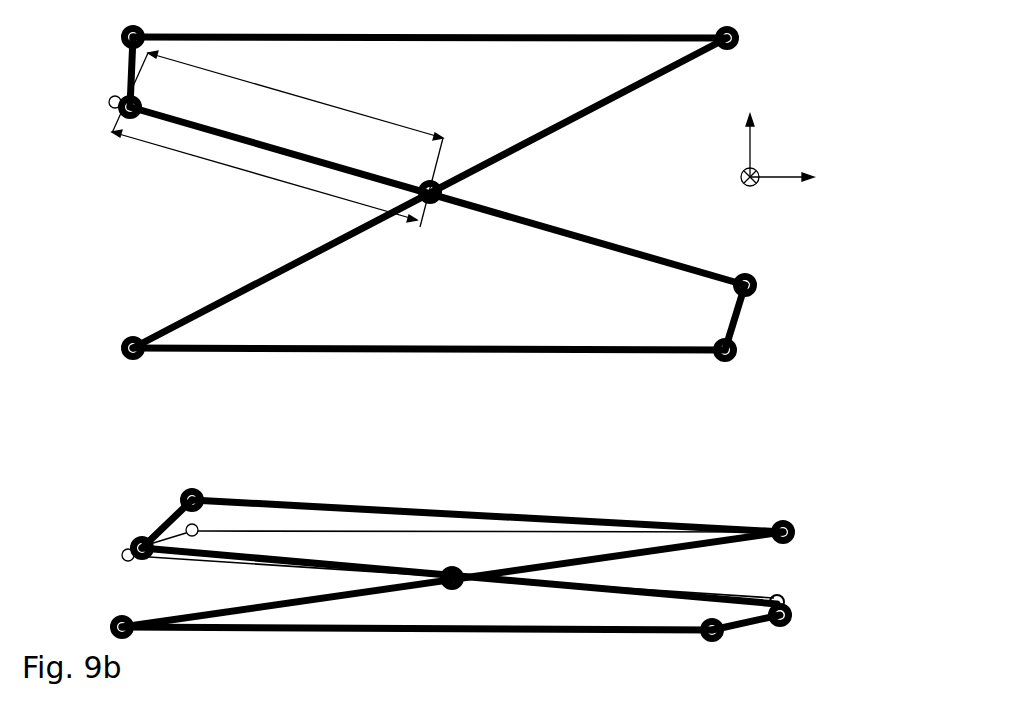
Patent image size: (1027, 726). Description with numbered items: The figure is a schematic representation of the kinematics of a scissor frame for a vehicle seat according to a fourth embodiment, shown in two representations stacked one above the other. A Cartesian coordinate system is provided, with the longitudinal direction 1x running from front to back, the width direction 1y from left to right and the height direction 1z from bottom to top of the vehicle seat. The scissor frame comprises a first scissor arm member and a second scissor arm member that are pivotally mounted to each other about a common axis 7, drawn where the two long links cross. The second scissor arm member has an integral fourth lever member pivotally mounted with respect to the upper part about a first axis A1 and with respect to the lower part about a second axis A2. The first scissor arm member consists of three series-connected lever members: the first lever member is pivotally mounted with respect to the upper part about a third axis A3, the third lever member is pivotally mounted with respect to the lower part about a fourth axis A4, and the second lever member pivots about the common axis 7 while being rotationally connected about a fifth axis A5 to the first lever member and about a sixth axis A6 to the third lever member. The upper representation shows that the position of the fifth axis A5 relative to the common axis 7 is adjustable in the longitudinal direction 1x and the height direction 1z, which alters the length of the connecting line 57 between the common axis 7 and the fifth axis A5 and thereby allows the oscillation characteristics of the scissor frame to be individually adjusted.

The first axis A1 is at (740, 44).
The second axis A2 is at (123, 346).
The third axis A3 is at (122, 34).
The fourth axis A4 is at (738, 350).
The fifth axis A5 is at (130, 550).
The sixth axis A6 is at (758, 283).
The common axis 7 is at (430, 202).
The connecting line 57 is at (302, 102).
The longitudinal direction 1x is at (788, 180).
The width direction 1y is at (748, 186).
The height direction 1z is at (749, 143).